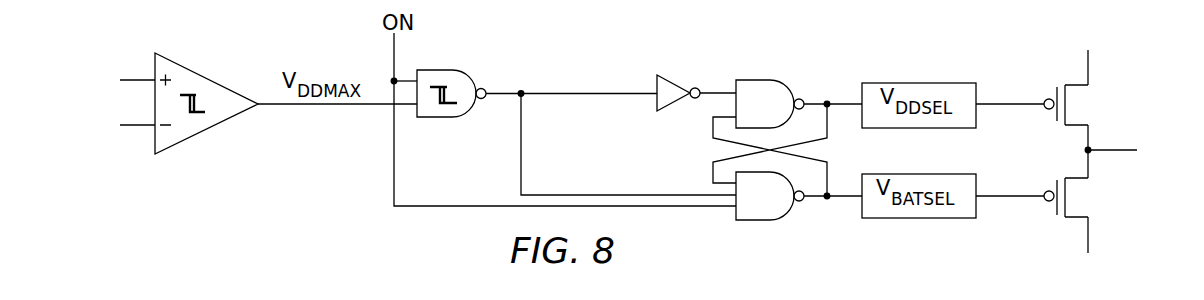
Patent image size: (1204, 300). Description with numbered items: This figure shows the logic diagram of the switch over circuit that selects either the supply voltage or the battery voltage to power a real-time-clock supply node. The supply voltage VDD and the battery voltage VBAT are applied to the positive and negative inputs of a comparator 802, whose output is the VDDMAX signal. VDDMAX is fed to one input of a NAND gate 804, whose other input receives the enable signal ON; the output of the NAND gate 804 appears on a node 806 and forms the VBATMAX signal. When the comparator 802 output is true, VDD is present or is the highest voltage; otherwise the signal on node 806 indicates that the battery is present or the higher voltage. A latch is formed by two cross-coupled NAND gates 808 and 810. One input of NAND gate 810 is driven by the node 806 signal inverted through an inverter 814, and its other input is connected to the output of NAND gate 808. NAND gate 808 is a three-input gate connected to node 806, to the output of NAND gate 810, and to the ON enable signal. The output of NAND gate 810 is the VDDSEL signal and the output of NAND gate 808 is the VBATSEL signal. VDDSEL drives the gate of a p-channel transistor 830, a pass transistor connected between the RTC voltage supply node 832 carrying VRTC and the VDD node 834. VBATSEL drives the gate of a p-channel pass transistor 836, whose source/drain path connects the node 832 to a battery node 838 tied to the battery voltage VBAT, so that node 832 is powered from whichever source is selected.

The comparator 802 is at (207, 78).
The NAND gate 804 is at (437, 69).
The node 806 is at (527, 97).
The NAND gate 808 is at (758, 221).
The NAND gate 810 is at (757, 80).
The inverter 814 is at (673, 83).
The p-channel transistor 830 is at (1056, 91).
The RTC voltage supply node 832 is at (1092, 145).
The VDD node 834 is at (1090, 67).
The p-channel pass transistor 836 is at (1056, 210).
The battery node 838 is at (1090, 238).